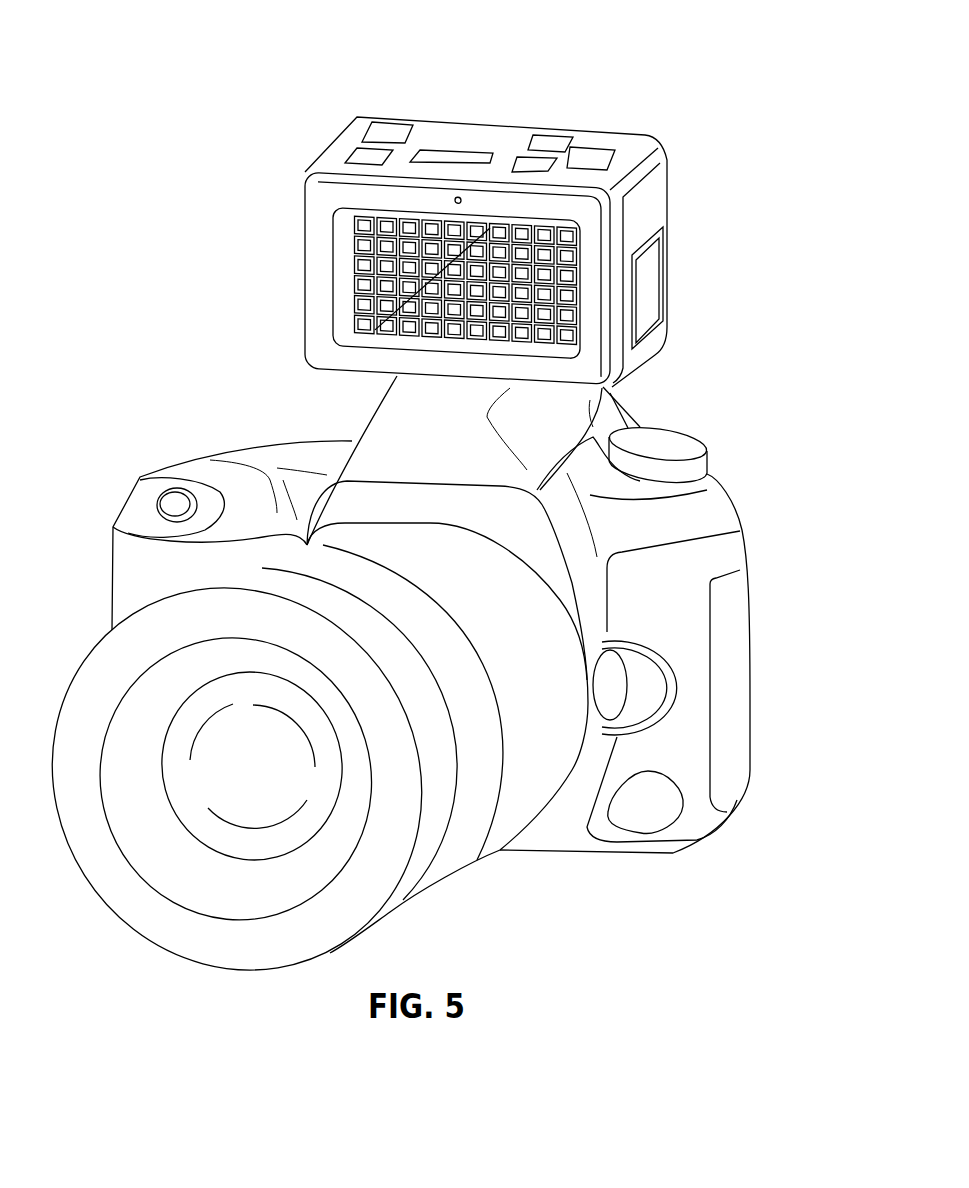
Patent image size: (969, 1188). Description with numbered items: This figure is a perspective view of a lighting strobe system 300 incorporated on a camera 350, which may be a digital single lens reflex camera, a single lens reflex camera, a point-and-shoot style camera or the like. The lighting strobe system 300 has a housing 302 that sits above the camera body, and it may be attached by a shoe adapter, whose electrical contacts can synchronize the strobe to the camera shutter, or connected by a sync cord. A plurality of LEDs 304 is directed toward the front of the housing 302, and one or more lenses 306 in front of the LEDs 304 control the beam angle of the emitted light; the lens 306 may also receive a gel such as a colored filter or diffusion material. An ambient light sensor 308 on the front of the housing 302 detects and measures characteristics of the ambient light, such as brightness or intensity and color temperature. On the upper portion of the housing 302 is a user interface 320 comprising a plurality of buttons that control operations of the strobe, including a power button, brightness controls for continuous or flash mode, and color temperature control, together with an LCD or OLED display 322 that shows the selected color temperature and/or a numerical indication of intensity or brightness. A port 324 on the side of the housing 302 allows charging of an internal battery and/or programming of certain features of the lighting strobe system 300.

The lighting strobe system 300 is at (92, 90).
The housing 302 is at (298, 218).
The plurality of LEDs 304 is at (568, 244).
The lenses 306 is at (345, 288).
The ambient light sensor 308 is at (457, 196).
The user interface 320 is at (566, 134).
The LCD or OLED display 322 is at (503, 148).
The port 324 is at (644, 292).
The camera 350 is at (143, 477).